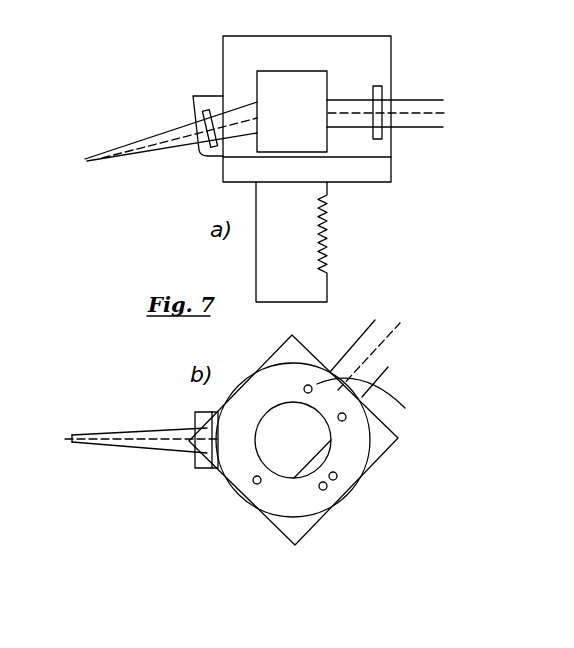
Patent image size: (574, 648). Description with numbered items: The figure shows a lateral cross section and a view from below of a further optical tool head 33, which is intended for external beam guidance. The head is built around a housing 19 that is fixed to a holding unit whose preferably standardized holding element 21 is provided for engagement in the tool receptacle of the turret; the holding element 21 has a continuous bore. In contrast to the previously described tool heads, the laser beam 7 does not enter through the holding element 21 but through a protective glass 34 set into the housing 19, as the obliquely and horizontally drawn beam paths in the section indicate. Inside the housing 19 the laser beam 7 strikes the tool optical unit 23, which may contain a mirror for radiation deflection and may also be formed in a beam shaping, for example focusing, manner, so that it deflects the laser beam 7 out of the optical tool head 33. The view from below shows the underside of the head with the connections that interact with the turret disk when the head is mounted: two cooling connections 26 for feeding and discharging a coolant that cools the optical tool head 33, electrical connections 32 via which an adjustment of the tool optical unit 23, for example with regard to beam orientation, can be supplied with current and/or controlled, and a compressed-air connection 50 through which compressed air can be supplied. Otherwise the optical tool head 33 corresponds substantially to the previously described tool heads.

The laser beam 7 is at (425, 101).
The housing 19 is at (380, 56).
The holding element 21 is at (300, 265).
The tool optical unit 23 is at (275, 90).
The cooling connections 26 is at (347, 417).
The electrical connections 32 is at (340, 484).
The optical tool head 33 is at (413, 192).
The protective glass 34 is at (378, 86).
The compressed-air connection 50 is at (256, 485).